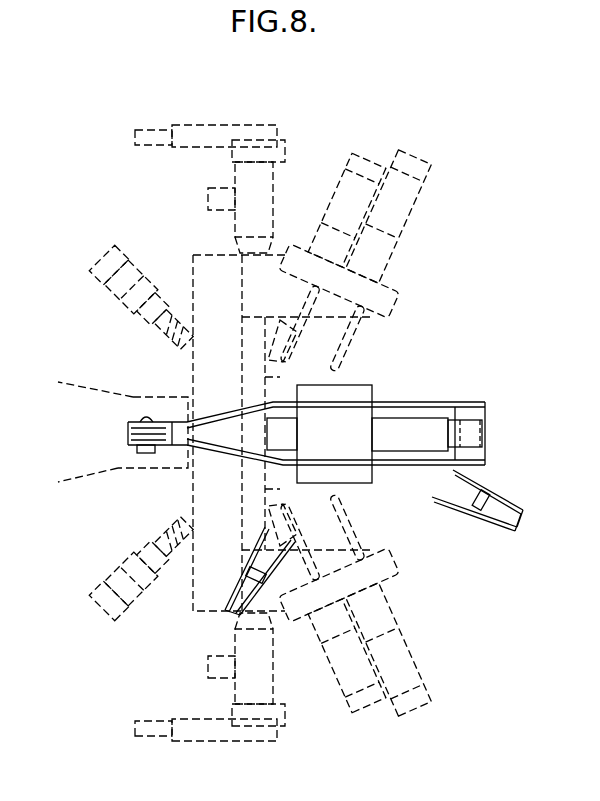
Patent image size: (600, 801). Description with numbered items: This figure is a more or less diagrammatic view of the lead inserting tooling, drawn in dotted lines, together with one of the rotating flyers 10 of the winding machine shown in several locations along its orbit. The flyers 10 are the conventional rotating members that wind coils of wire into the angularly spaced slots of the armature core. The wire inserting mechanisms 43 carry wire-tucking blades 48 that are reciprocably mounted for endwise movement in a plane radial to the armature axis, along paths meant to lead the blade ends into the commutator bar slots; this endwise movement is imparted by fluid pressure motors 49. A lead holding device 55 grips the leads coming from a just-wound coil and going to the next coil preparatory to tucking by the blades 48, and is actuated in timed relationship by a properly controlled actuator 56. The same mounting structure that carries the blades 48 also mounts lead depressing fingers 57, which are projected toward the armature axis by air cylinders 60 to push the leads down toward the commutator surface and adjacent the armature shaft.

The rotating flyer 10 is at (130, 411).
The wire inserting mechanism 43 is at (405, 284).
The wire-tucking blade 48 is at (283, 358).
The fluid pressure motor 49 is at (345, 191).
The lead holding device 55 is at (197, 478).
The actuator 56 is at (149, 284).
The lead depressing finger 57 is at (302, 353).
The air cylinder 60 is at (400, 217).